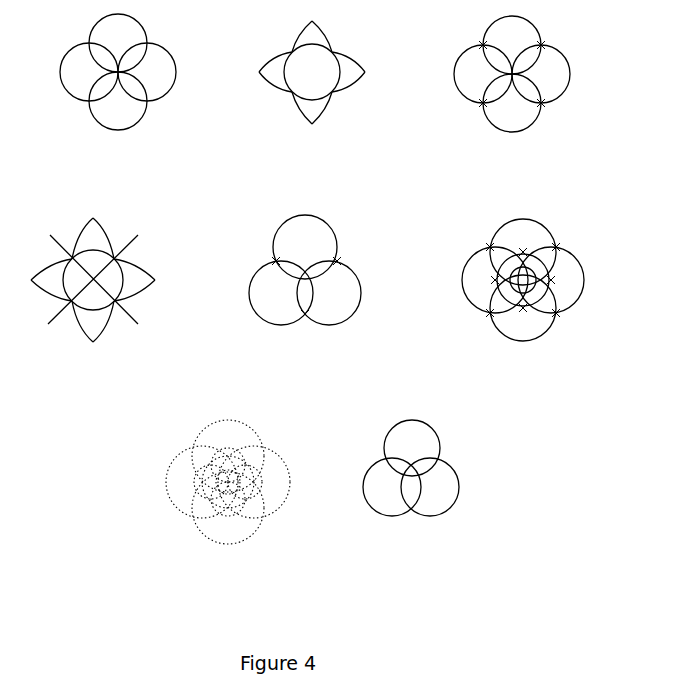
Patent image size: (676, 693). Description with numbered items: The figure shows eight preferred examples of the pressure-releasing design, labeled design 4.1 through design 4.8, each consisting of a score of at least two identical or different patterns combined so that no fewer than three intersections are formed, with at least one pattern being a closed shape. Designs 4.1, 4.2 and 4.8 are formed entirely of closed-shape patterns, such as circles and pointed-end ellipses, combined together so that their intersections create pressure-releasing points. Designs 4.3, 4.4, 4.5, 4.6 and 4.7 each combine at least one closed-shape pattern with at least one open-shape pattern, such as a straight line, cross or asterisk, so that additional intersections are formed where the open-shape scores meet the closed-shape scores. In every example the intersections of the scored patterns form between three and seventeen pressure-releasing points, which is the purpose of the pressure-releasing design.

The pressure-releasing design 4.1 is at (118, 102).
The pressure-releasing design 4.2 is at (312, 97).
The pressure-releasing design 4.3 is at (512, 96).
The pressure-releasing design 4.4 is at (93, 305).
The pressure-releasing design 4.5 is at (305, 303).
The pressure-releasing design 4.6 is at (523, 305).
The pressure-releasing design 4.7 is at (228, 511).
The pressure-releasing design 4.8 is at (411, 508).